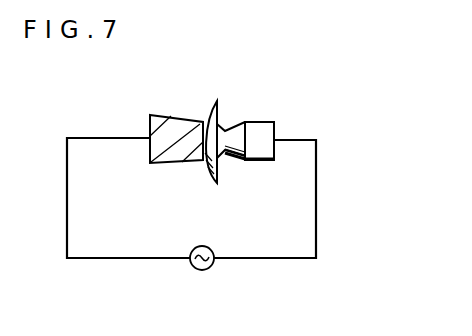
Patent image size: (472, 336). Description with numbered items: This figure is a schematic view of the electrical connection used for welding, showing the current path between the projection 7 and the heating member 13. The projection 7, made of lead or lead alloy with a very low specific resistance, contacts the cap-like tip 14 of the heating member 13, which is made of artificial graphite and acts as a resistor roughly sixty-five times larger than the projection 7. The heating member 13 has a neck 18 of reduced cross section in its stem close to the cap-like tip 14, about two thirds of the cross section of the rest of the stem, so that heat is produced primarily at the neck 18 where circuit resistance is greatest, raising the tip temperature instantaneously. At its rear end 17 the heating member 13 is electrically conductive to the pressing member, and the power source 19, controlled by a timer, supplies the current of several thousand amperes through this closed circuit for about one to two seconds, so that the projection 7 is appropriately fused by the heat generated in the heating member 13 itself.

The projection 7 is at (180, 132).
The cap-like tip 14 is at (212, 120).
The heating member 13 is at (240, 135).
The rear end 17 is at (273, 132).
The neck 18 is at (222, 157).
The power source 19 is at (203, 271).